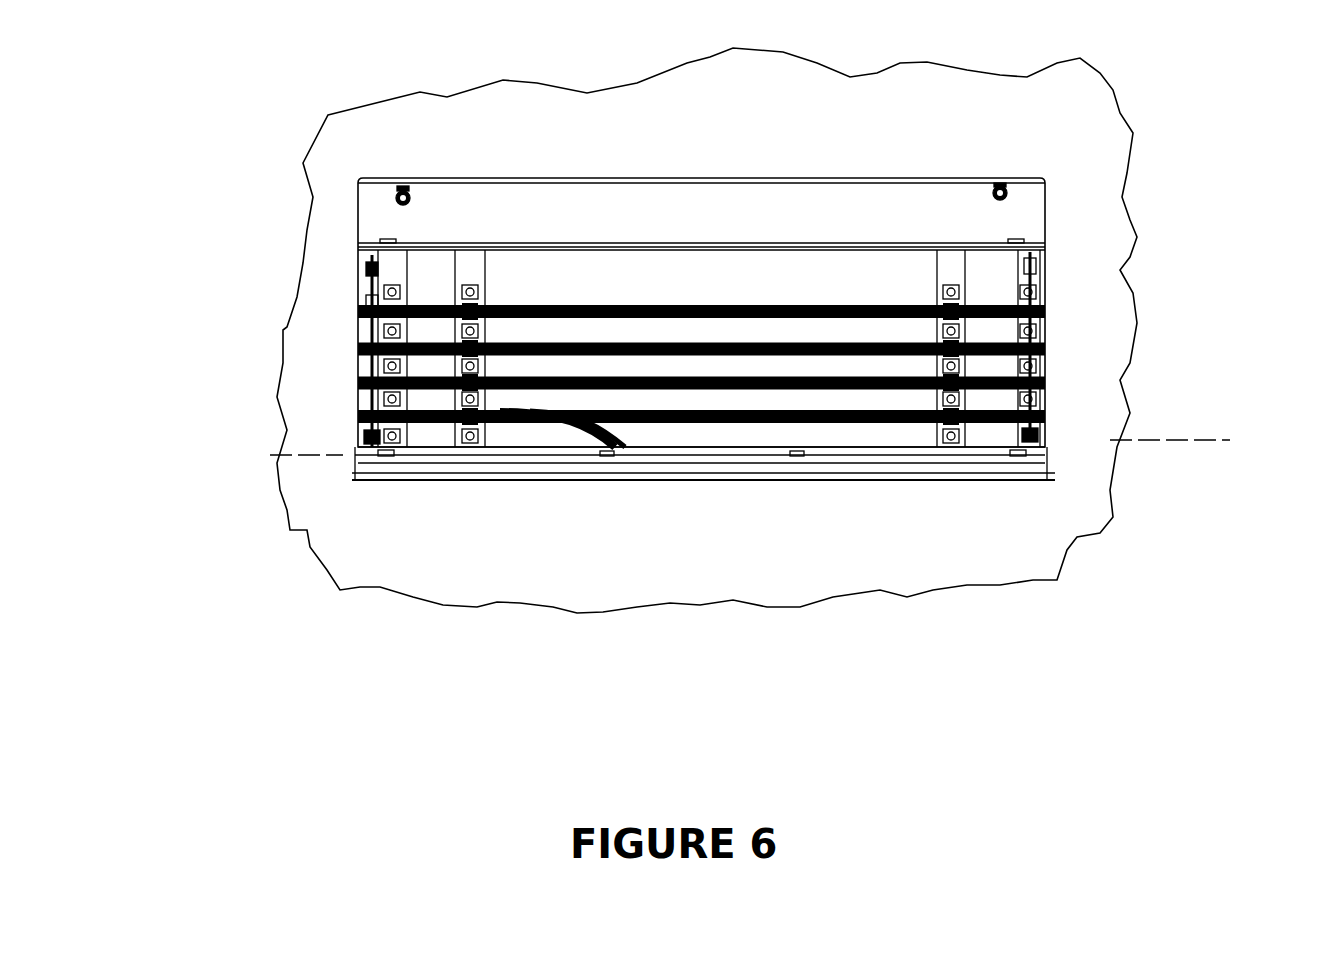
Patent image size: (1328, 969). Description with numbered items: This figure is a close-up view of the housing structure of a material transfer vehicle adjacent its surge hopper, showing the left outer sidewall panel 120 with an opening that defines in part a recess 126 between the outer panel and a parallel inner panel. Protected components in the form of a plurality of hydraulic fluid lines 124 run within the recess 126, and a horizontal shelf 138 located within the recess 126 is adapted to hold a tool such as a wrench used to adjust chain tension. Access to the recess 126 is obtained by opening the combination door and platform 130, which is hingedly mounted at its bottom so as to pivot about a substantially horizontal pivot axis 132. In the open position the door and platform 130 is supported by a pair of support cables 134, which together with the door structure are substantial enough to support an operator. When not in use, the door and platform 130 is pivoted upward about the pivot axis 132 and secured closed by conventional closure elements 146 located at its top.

The left outer sidewall panel 120 is at (985, 147).
The hydraulic fluid lines 124 is at (707, 305).
The recess 126 is at (588, 272).
The combination door and platform 130 is at (740, 482).
The pivot axis 132 is at (1155, 430).
The support cables 134 is at (358, 334).
The horizontal shelf 138 is at (680, 240).
The closure elements 146 is at (390, 204).